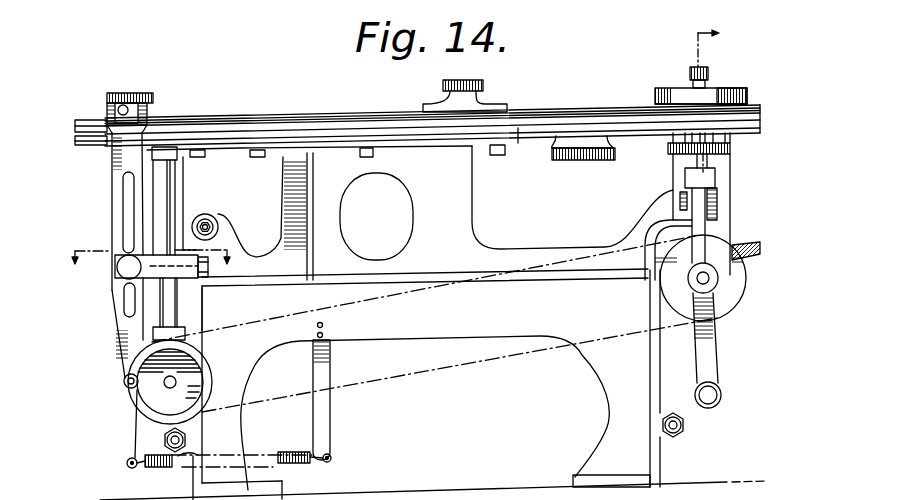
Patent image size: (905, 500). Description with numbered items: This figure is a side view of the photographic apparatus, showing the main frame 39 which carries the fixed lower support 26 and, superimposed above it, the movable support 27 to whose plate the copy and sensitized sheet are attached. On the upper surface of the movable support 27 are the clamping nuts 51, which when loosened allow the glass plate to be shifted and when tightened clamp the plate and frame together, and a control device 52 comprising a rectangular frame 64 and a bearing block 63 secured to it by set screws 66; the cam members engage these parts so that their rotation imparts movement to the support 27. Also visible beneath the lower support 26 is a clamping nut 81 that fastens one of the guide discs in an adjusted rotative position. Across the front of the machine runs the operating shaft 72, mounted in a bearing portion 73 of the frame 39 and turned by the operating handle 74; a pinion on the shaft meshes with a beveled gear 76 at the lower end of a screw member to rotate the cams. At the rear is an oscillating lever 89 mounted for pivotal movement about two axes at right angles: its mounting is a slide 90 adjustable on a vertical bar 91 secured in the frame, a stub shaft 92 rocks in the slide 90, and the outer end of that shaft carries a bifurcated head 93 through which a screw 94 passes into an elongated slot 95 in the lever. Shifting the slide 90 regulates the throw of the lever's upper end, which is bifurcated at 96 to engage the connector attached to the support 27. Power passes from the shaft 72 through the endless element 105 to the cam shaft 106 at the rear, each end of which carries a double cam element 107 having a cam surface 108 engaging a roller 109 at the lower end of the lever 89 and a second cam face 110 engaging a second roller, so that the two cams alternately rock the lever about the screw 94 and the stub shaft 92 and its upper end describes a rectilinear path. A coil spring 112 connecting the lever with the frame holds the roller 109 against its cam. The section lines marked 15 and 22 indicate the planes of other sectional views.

The section line 15- 15 is at (147, 260).
The section line 22- 22 is at (710, 162).
The lower support 26 is at (518, 144).
The movable support 27 is at (589, 109).
The frame 39 is at (391, 332).
The clamping nut 51 is at (152, 93).
The control device 52 is at (651, 95).
The bearing block 63 is at (663, 87).
The rectangular frame 64 is at (748, 97).
The set screw 66 is at (710, 73).
The operating shaft 72 is at (714, 281).
The bearing portion 73 is at (723, 230).
The operating handle 74 is at (718, 353).
The beveled gear 76 is at (753, 244).
The clamping nut 81 is at (583, 152).
The oscillating lever 89 is at (112, 160).
The slide 90 is at (176, 256).
The vertical bar 91 is at (166, 182).
The stub shaft 92 is at (203, 288).
The bifurcated head 93 is at (147, 277).
The screw 94 is at (127, 270).
The elongated slot 95 is at (125, 197).
The bifurcated upper end 96 is at (107, 103).
The endless element 105 is at (377, 387).
The cam shaft 106 is at (173, 380).
The double cam element 107 is at (211, 395).
The cam surface 108 is at (152, 402).
The roller 109 is at (124, 384).
The second cam face 110 is at (160, 410).
The coil spring 112 is at (172, 462).